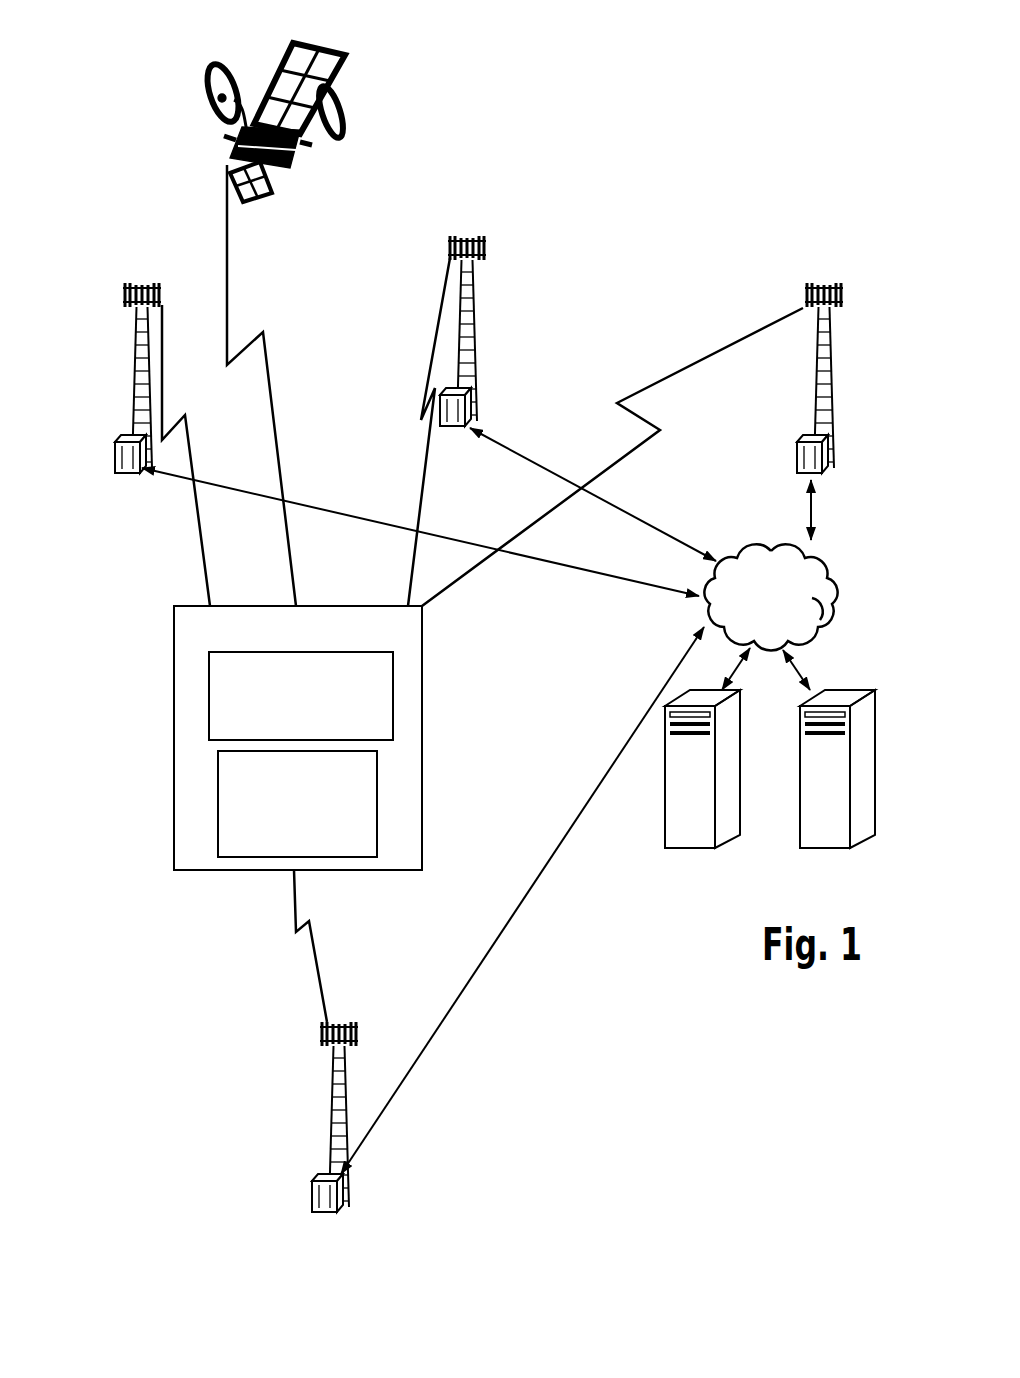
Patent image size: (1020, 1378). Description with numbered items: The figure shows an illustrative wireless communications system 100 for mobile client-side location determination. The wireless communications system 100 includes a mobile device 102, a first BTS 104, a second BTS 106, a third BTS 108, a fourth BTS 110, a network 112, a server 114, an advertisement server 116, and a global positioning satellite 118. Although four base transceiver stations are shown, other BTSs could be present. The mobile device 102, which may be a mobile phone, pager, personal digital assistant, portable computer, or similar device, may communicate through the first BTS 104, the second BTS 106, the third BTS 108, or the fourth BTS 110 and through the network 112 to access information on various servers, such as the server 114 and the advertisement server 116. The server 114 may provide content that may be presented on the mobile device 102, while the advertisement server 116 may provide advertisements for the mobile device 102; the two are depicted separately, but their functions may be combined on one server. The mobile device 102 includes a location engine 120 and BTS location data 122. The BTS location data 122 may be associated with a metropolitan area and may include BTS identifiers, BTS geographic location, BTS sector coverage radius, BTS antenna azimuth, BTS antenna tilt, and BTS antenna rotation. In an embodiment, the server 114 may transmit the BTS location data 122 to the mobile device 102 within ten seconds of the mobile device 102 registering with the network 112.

The wireless communications system 100 is at (626, 146).
The mobile device 102 is at (298, 738).
The first BTS 104 is at (127, 393).
The second BTS 106 is at (447, 345).
The third BTS 108 is at (796, 394).
The fourth BTS 110 is at (326, 1129).
The network 112 is at (846, 572).
The server 114 is at (664, 848).
The advertisement server 116 is at (800, 848).
The global positioning satellite 118 is at (230, 153).
The location engine 120 is at (301, 696).
The BTS location data 122 is at (297, 804).